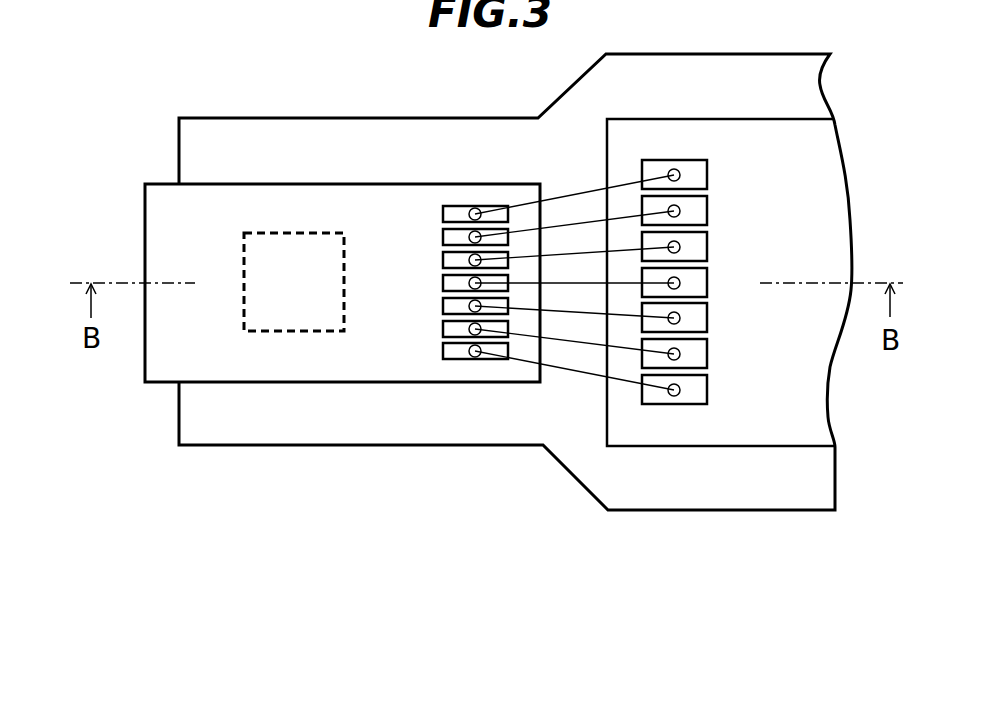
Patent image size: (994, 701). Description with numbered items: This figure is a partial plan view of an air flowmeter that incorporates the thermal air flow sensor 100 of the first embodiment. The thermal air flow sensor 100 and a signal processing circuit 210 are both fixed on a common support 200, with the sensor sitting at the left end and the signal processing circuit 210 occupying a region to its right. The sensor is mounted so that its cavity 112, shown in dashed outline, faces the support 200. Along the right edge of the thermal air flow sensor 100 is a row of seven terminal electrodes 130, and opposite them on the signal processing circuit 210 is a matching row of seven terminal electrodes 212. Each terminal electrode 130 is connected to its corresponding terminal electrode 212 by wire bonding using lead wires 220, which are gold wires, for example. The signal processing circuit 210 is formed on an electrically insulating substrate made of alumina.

The thermal air flow sensor 100 is at (160, 364).
The cavity 112 is at (271, 252).
The terminal electrodes 130 is at (443, 354).
The support 200 is at (238, 422).
The signal processing circuit 210 is at (640, 427).
The terminal electrodes 212 is at (698, 393).
The lead wires 220 is at (577, 372).